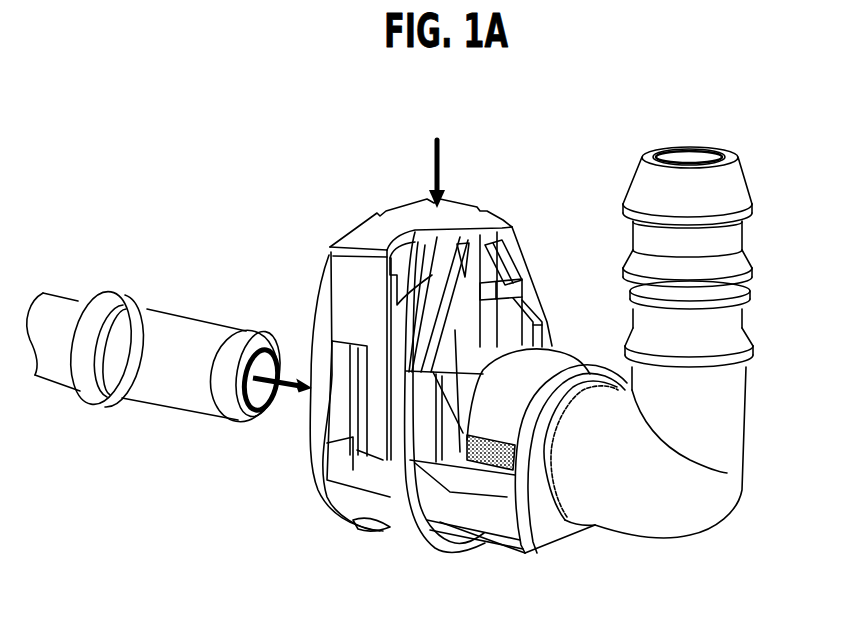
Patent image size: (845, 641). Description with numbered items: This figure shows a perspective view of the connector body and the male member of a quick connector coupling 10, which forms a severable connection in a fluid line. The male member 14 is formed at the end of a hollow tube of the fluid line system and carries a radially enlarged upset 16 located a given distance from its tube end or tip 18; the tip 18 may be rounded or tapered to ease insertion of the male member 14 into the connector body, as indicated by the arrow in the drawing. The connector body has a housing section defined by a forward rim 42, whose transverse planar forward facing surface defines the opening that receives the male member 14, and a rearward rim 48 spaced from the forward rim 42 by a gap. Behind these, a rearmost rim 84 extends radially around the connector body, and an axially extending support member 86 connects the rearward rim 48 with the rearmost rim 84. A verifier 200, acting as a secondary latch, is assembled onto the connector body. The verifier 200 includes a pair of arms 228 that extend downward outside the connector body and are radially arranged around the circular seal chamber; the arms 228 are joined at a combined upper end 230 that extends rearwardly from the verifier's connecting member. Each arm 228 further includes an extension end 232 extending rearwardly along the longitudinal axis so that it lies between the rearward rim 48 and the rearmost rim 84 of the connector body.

The quick connector coupling 10 is at (760, 158).
The male member 14 is at (180, 395).
The upset 16 is at (119, 290).
The tube end or tip 18 is at (255, 337).
The forward rim 42 is at (313, 432).
The rearward rim 48 is at (400, 473).
The rearmost rim 84 is at (538, 520).
The support member 86 is at (503, 538).
The verifier 200 is at (373, 232).
The arms 228 is at (527, 358).
The combined upper end 230 is at (513, 257).
The extension end 232 is at (467, 485).